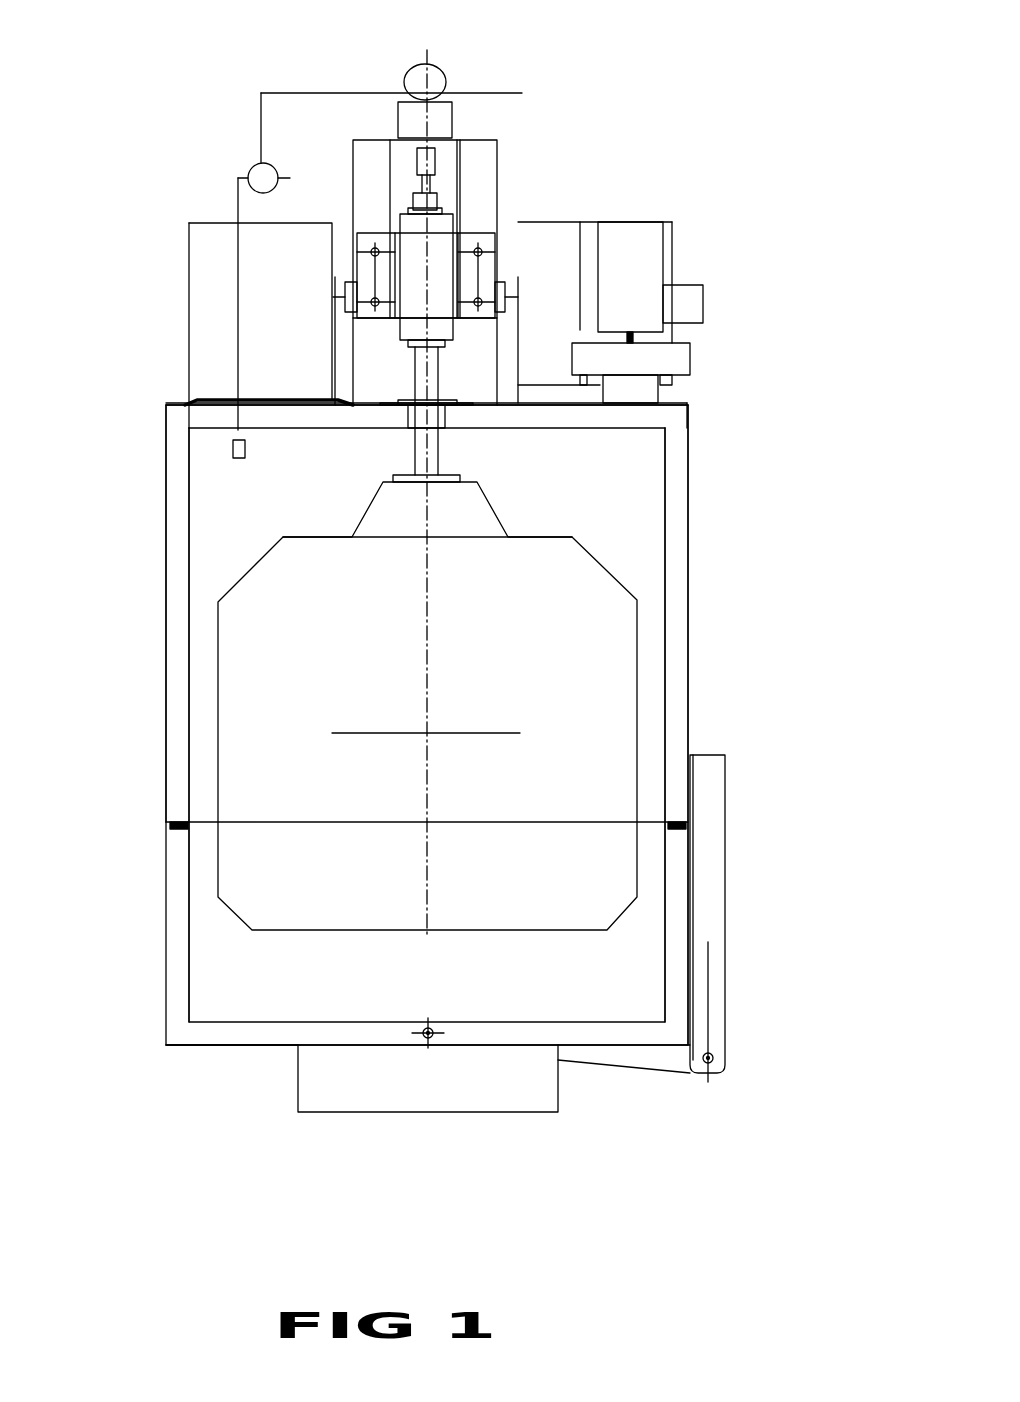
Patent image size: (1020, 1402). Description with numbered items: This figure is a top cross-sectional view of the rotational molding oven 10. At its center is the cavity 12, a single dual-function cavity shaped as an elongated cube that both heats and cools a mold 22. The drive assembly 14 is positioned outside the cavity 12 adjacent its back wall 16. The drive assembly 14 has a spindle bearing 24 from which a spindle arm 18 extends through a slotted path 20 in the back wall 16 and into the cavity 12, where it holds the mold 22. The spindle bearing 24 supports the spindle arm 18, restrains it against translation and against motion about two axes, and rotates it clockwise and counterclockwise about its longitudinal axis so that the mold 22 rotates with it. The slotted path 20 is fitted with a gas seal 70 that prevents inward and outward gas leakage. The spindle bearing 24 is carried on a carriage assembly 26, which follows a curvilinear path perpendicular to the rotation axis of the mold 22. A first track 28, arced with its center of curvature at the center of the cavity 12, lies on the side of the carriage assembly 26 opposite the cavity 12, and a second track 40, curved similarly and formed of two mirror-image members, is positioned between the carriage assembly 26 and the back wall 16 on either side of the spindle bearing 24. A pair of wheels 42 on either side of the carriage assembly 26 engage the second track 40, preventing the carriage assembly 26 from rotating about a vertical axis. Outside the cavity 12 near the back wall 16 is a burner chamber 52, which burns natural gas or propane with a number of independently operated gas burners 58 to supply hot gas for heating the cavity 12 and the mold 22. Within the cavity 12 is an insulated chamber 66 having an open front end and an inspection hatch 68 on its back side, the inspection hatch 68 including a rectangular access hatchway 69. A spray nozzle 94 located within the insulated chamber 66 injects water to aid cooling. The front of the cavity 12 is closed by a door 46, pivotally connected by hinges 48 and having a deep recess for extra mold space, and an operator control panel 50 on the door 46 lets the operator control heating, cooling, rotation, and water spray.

The rotational molding oven 10 is at (166, 138).
The cavity 12 is at (288, 1000).
The drive assembly 14 is at (403, 122).
The back wall 16 is at (549, 403).
The spindle arm 18 is at (420, 377).
The slotted path 20 is at (447, 428).
The mold 22 is at (608, 570).
The spindle bearing 24 is at (432, 262).
The carriage assembly 26 is at (481, 145).
The first track 28 is at (418, 64).
The second track 40 is at (543, 233).
The pair of wheels 42 is at (508, 233).
The door 46 is at (222, 1040).
The hinges 48 is at (703, 1060).
The operator control panel 50 is at (520, 1112).
The burner chamber 52 is at (590, 232).
The gas burners 58 is at (700, 290).
The insulated chamber 66 is at (210, 455).
The inspection hatch 68 is at (180, 396).
The access hatchway 69 is at (222, 420).
The gas seal 70 is at (445, 403).
The spray nozzle 94 is at (247, 449).